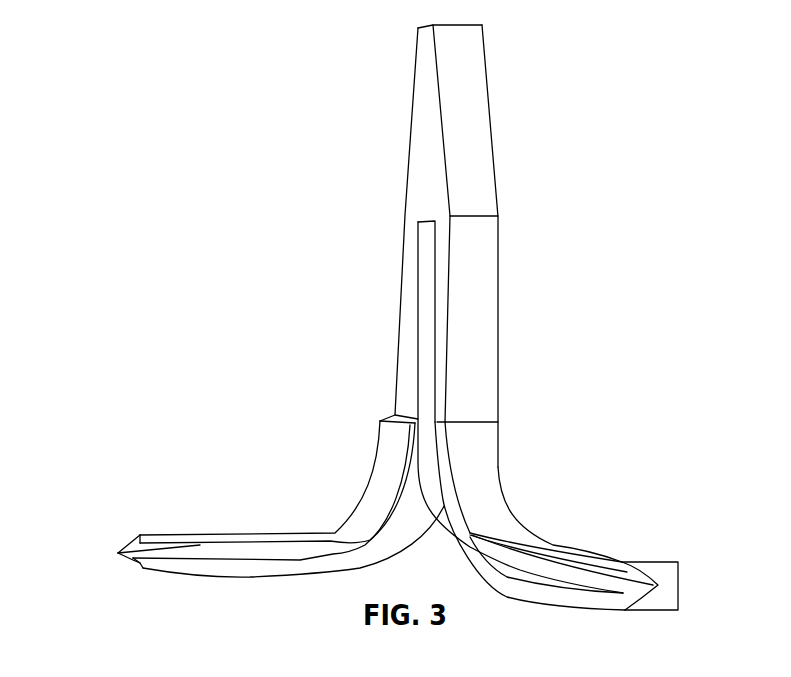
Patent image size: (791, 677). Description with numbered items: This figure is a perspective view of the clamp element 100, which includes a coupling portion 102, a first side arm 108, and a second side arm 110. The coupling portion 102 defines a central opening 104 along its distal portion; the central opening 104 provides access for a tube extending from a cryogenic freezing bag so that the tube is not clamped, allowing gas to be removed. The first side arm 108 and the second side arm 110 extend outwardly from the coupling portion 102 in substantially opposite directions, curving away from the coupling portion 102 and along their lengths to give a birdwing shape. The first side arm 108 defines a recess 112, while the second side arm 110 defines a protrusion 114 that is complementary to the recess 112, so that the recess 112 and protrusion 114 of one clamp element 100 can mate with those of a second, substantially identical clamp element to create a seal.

The clamp element 100 is at (246, 82).
The coupling portion 102 is at (488, 185).
The central opening 104 is at (424, 299).
The first side arm 108 is at (513, 540).
The second side arm 110 is at (253, 540).
The recess 112 is at (630, 582).
The protrusion 114 is at (126, 557).